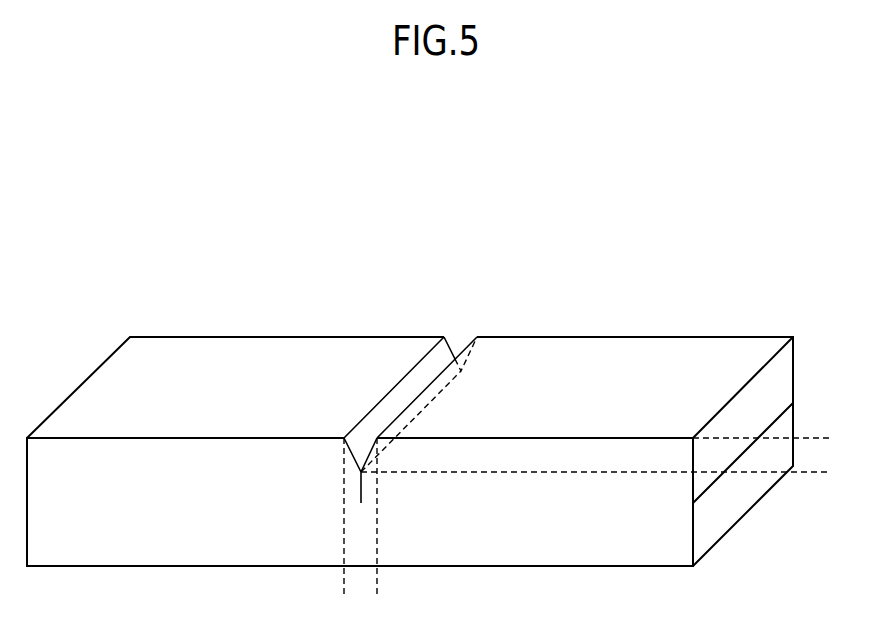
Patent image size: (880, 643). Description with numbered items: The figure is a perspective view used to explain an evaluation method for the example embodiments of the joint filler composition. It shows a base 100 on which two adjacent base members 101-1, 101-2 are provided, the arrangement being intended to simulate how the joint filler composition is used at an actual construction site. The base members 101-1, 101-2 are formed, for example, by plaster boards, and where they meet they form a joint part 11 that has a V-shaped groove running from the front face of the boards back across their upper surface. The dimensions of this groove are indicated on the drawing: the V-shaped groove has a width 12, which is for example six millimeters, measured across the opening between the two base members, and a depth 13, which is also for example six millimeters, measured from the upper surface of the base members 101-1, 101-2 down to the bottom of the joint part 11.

The base 100 is at (563, 550).
The base member 101-1 is at (195, 357).
The base member 101-2 is at (626, 357).
The joint part 11 is at (360, 460).
The width 12 is at (377, 593).
The depth 13 is at (821, 438).